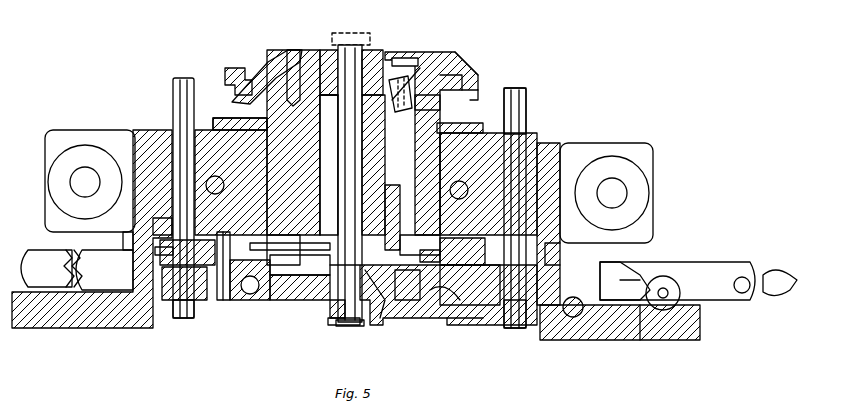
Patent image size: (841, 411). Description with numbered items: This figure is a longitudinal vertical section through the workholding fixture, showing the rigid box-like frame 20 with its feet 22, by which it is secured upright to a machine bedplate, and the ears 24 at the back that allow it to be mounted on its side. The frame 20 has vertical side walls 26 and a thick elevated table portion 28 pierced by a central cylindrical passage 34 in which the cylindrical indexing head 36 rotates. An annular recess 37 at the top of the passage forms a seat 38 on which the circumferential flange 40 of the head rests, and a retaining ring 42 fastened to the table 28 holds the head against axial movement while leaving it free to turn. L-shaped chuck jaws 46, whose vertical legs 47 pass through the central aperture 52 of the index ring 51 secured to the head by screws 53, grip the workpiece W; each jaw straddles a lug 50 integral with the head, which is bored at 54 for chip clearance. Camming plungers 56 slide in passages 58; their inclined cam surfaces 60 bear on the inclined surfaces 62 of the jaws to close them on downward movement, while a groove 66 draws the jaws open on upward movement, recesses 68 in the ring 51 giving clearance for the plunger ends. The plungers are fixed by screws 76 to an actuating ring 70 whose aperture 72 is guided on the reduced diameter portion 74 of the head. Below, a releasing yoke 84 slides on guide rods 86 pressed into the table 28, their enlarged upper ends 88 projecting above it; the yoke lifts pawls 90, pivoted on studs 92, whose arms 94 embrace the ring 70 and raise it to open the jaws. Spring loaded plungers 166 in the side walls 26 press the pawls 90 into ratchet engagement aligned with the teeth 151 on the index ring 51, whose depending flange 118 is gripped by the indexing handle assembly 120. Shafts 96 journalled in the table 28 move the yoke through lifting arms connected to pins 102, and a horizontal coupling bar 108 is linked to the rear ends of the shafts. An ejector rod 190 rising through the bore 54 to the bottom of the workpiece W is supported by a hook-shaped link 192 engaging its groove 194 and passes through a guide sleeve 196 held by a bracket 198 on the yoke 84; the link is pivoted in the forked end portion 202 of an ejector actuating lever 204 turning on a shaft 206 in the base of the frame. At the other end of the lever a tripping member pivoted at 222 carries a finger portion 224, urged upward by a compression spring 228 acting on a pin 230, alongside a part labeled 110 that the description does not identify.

The frame 20 is at (563, 143).
The feet 22 is at (40, 322).
The ears 24 is at (60, 138).
The vertical side walls 26 is at (128, 262).
The horizontal table portion 28 is at (145, 160).
The cylindrical passage 34 is at (268, 158).
The indexing head 36 is at (302, 142).
The annular recess 37 is at (238, 128).
The seat 38 is at (462, 152).
The circumferential flange 40 is at (455, 125).
The retaining ring 42 is at (498, 95).
The chuck jaws 46 is at (390, 92).
The vertical leg 47 is at (378, 50).
The lug 50 is at (448, 75).
The index ring 51 is at (248, 62).
The central circular aperture 52 is at (326, 50).
The screws 53 is at (290, 50).
The central bore 54 is at (328, 153).
The camming plungers 56 is at (422, 178).
The passages 58 is at (420, 214).
The cam surface 60 is at (340, 113).
The inclined surface 62 is at (420, 68).
The groove 66 is at (468, 90).
The recesses 68 is at (410, 58).
The actuating ring 70 is at (300, 300).
The aperture 72 is at (300, 258).
The reduced diameter portion 74 is at (290, 224).
The screw 76 is at (420, 236).
The releasing yoke 84 is at (192, 310).
The guide rods 86 is at (178, 222).
The enlarged upper ends 88 is at (178, 85).
The thrust transmitting members 90 is at (248, 240).
The vertical stud 92 is at (212, 266).
The horizontally extending arms 94 is at (268, 240).
The shafts 96 is at (224, 185).
The pins 102 is at (230, 300).
The horizontal coupling bar 108 is at (70, 255).
The clip 110 is at (780, 272).
The depending annular flange 118 is at (480, 98).
The indexing handle assembly 120 is at (440, 326).
The teeth 151 is at (228, 80).
The spring loaded plungers 166 is at (145, 230).
The ejector rod 190 is at (340, 111).
The hook-shaped link 192 is at (330, 310).
The circumferential groove 194 is at (352, 326).
The guide sleeve 196 is at (372, 198).
The bracket 198 is at (372, 330).
The forked end portion 202 is at (328, 322).
The ejector actuating lever 204 is at (470, 326).
The shaft 206 is at (573, 318).
The pivot 222 is at (668, 277).
The finger portion 224 is at (635, 270).
The compression spring 228 is at (645, 340).
The pin 230 is at (622, 274).
The workpiece W is at (356, 33).